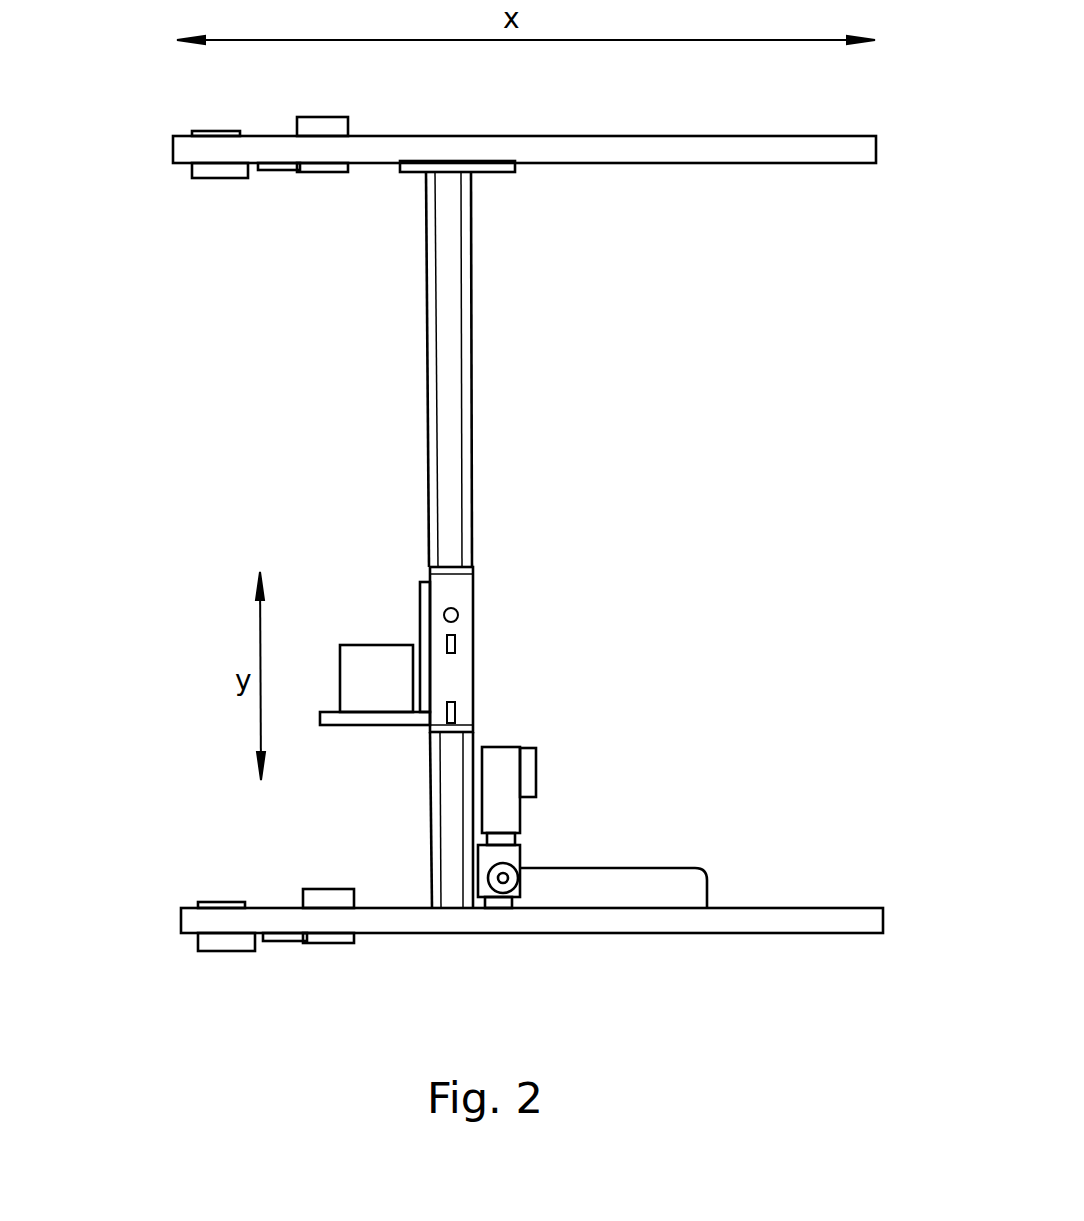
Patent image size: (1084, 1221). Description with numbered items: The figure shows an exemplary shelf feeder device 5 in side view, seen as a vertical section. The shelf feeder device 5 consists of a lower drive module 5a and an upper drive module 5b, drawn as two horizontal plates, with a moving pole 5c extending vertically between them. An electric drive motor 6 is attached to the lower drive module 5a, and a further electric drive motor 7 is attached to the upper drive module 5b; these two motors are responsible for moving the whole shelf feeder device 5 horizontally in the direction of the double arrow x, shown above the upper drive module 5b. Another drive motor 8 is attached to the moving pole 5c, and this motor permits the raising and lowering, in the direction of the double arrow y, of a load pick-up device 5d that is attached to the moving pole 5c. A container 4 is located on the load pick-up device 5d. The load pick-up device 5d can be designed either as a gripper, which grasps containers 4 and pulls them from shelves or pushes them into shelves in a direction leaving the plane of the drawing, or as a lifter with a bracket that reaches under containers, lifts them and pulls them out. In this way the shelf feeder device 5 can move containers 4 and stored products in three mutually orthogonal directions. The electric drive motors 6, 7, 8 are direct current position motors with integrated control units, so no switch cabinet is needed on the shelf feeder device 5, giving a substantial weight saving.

The shelf feeder device 5 is at (182, 295).
The lower drive module 5a is at (828, 916).
The upper drive module 5b is at (798, 152).
The moving pole 5c is at (452, 358).
The load pick-up device 5d is at (382, 713).
The container 4 is at (372, 677).
The electric drive motor 6 is at (325, 898).
The further electric drive motor 7 is at (328, 166).
The drive motor 8 is at (497, 790).